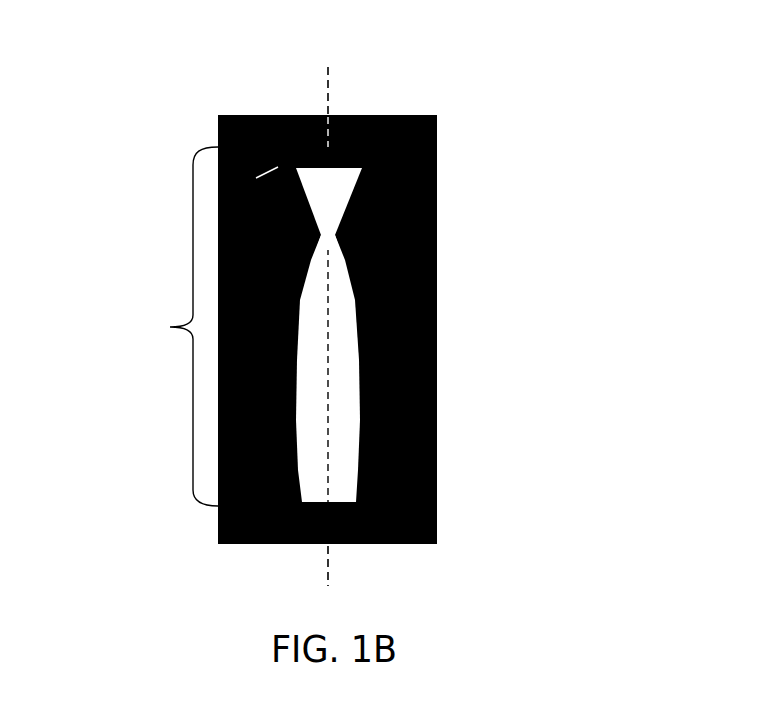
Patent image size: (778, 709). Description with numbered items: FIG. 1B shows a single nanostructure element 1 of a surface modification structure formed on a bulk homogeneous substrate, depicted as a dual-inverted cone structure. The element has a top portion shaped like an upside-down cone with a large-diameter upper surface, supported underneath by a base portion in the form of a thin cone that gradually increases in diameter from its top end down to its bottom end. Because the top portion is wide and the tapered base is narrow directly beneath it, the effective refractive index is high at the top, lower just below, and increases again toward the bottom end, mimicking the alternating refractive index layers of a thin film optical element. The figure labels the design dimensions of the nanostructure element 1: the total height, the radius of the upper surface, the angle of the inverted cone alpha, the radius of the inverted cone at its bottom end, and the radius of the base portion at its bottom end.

The nanostructure element 1 is at (140, 128).
The angle of the inverted cone alpha is at (368, 185).